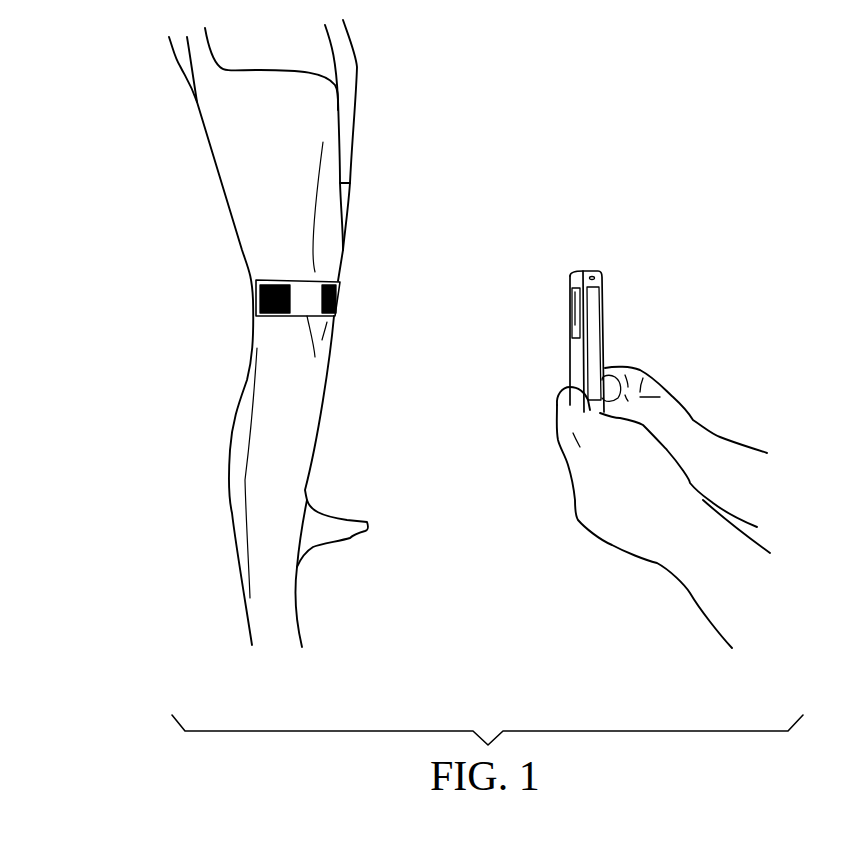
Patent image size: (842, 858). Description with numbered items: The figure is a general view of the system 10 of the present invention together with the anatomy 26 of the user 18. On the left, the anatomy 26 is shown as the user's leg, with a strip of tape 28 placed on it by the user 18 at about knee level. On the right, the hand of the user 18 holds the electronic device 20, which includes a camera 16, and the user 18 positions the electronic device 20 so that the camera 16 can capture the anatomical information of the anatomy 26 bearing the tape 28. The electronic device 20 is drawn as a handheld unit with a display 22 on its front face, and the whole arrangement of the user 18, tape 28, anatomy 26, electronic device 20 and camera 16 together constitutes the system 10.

The system 10 is at (152, 147).
The camera 16 is at (570, 302).
The user 18 is at (613, 492).
The electronic device 20 is at (584, 272).
The display 22 is at (592, 315).
The anatomy 26 is at (263, 212).
The tape 28 is at (260, 298).